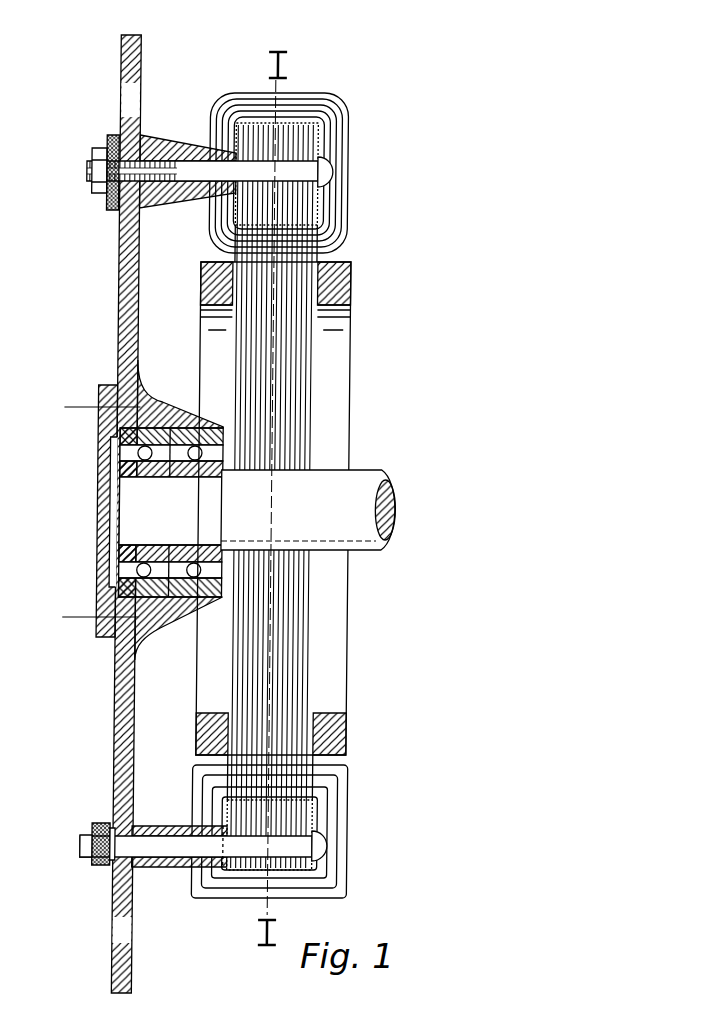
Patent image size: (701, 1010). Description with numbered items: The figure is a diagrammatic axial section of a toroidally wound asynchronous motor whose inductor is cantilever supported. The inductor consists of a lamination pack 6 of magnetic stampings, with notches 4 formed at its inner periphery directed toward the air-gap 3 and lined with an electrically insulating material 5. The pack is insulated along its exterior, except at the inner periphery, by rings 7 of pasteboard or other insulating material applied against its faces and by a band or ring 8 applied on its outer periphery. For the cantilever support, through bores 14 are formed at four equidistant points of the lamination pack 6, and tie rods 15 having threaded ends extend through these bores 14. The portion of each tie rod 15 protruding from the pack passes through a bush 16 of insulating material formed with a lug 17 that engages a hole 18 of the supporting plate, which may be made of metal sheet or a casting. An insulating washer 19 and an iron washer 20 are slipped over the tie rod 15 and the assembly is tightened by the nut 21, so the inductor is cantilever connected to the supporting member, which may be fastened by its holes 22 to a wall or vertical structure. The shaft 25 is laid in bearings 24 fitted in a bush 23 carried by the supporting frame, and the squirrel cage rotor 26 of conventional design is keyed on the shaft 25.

The air-gap 3 is at (330, 258).
The notches 4 is at (206, 258).
The electrically insulating material 5 is at (300, 243).
The lamination pack 6 is at (288, 126).
The rings 7 is at (233, 128).
The band or ring 8 is at (336, 108).
The through bores 14 is at (312, 160).
The tie rods 15 is at (332, 176).
The bush 16 is at (156, 140).
The lug 17 is at (155, 196).
The hole 18 is at (130, 200).
The insulating washer 19 is at (118, 135).
The iron washer 20 is at (108, 196).
The nut 21 is at (111, 147).
The holes 22 is at (134, 90).
The bush 23 is at (150, 400).
The bearings 24 is at (118, 492).
The shaft 25 is at (365, 482).
The rotor 26 is at (355, 618).